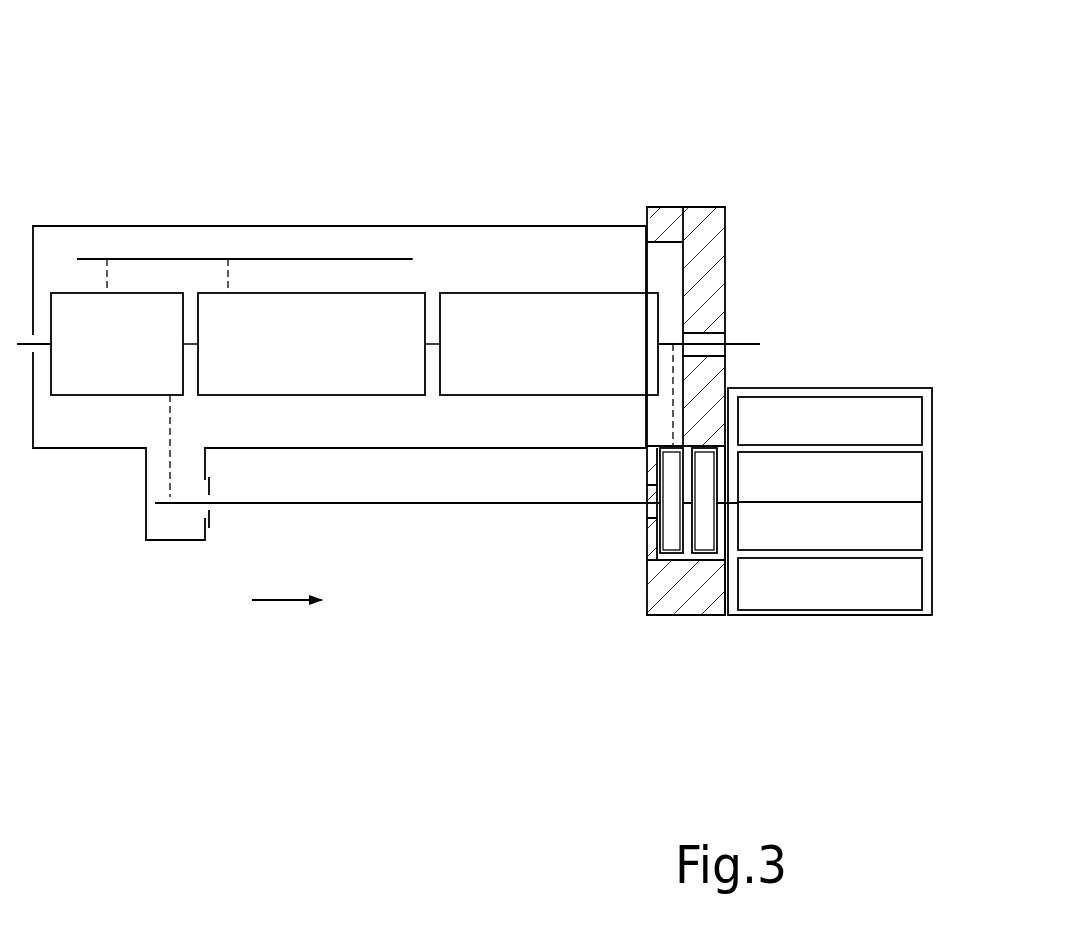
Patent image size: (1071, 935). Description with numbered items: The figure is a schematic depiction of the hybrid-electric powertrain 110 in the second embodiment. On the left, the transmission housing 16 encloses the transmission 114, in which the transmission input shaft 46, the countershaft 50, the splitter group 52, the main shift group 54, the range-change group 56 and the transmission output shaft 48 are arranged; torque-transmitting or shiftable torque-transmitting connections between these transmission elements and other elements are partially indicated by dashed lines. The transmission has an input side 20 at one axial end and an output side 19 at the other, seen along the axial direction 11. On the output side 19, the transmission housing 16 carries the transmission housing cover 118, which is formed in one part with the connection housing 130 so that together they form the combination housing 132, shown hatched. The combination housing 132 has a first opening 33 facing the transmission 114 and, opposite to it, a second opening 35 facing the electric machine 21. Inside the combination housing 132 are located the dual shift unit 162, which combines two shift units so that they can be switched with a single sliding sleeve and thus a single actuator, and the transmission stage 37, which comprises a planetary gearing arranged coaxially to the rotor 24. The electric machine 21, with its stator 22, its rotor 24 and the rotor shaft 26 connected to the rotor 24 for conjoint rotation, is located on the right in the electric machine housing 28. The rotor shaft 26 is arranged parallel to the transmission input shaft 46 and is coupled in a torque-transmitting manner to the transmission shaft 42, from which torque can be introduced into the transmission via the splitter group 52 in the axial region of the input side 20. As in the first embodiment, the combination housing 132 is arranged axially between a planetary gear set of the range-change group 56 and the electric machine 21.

The axial direction 11 is at (283, 598).
The transmission housing 16 is at (488, 226).
The output side 19 is at (590, 120).
The input side 20 is at (105, 99).
The electric machine 21 is at (812, 349).
The stator 22 is at (822, 590).
The rotor 24 is at (887, 533).
The rotor shaft 26 is at (838, 500).
The electric machine housing 28 is at (752, 617).
The first opening 33 is at (666, 262).
The second opening 35 is at (720, 537).
The transmission stage 37 is at (702, 542).
The transmission shaft 42 is at (432, 505).
The transmission input shaft 46 is at (38, 334).
The transmission output shaft 48 is at (733, 338).
The countershaft 50 is at (288, 260).
The splitter group 52 is at (128, 305).
The main shift group 54 is at (343, 305).
The range-change group 56 is at (542, 305).
The hybrid-electric powertrain 110 is at (316, 102).
The transmission 114 is at (428, 147).
The transmission housing cover 118 is at (699, 194).
The connection housing 130 is at (636, 601).
The combination housing 132 is at (713, 238).
The dual shift unit 162 is at (672, 537).